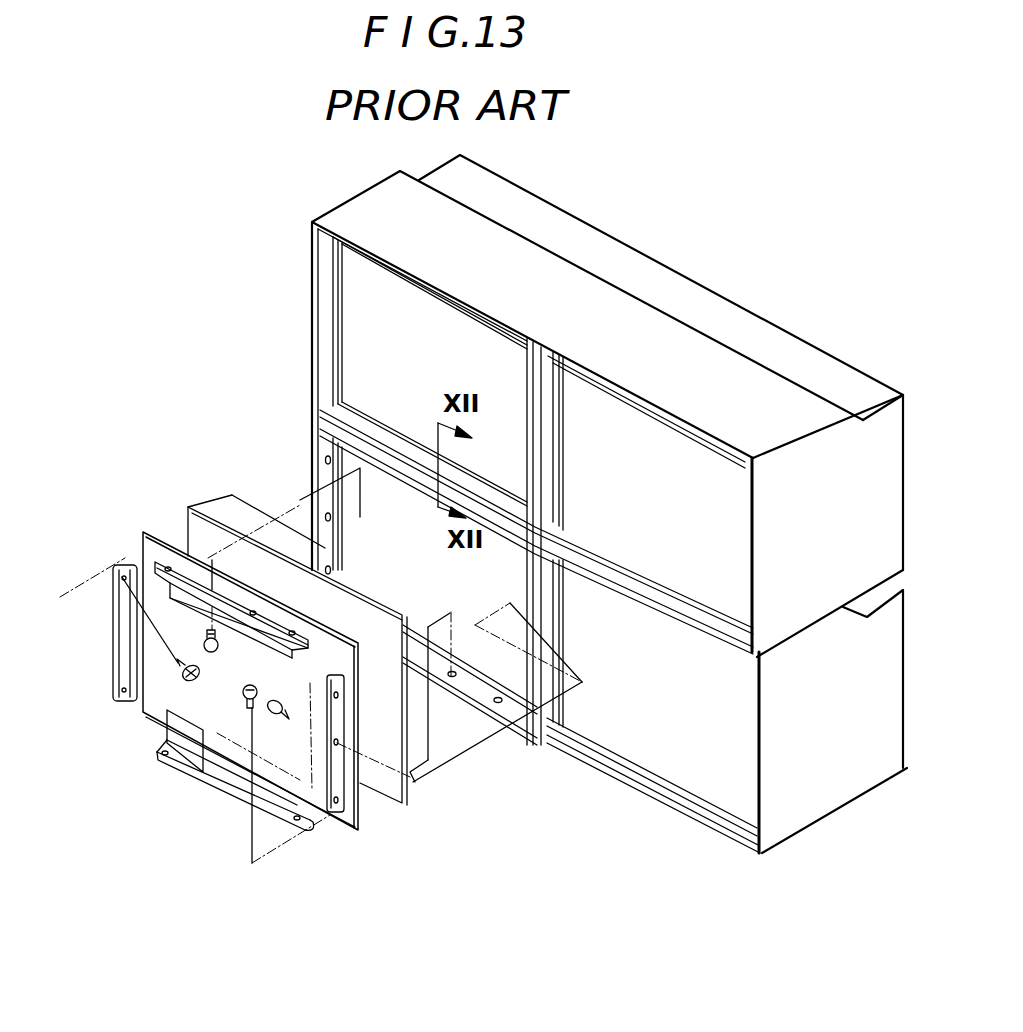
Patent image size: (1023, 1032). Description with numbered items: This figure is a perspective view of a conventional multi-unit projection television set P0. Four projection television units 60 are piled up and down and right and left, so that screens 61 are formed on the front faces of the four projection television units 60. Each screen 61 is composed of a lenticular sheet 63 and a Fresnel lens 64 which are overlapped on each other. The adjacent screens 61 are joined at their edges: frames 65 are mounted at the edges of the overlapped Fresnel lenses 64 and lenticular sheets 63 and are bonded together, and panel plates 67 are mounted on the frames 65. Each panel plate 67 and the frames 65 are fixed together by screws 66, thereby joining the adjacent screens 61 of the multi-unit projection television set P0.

The projection television unit 60 is at (640, 257).
The screen 61 is at (410, 818).
The lenticular sheet 63 is at (143, 532).
The Fresnel lens 64 is at (196, 504).
The frame 65 is at (376, 434).
The screw 66 is at (214, 653).
The panel plate 67 is at (113, 658).
The multi-unit projection television set P0 is at (745, 280).